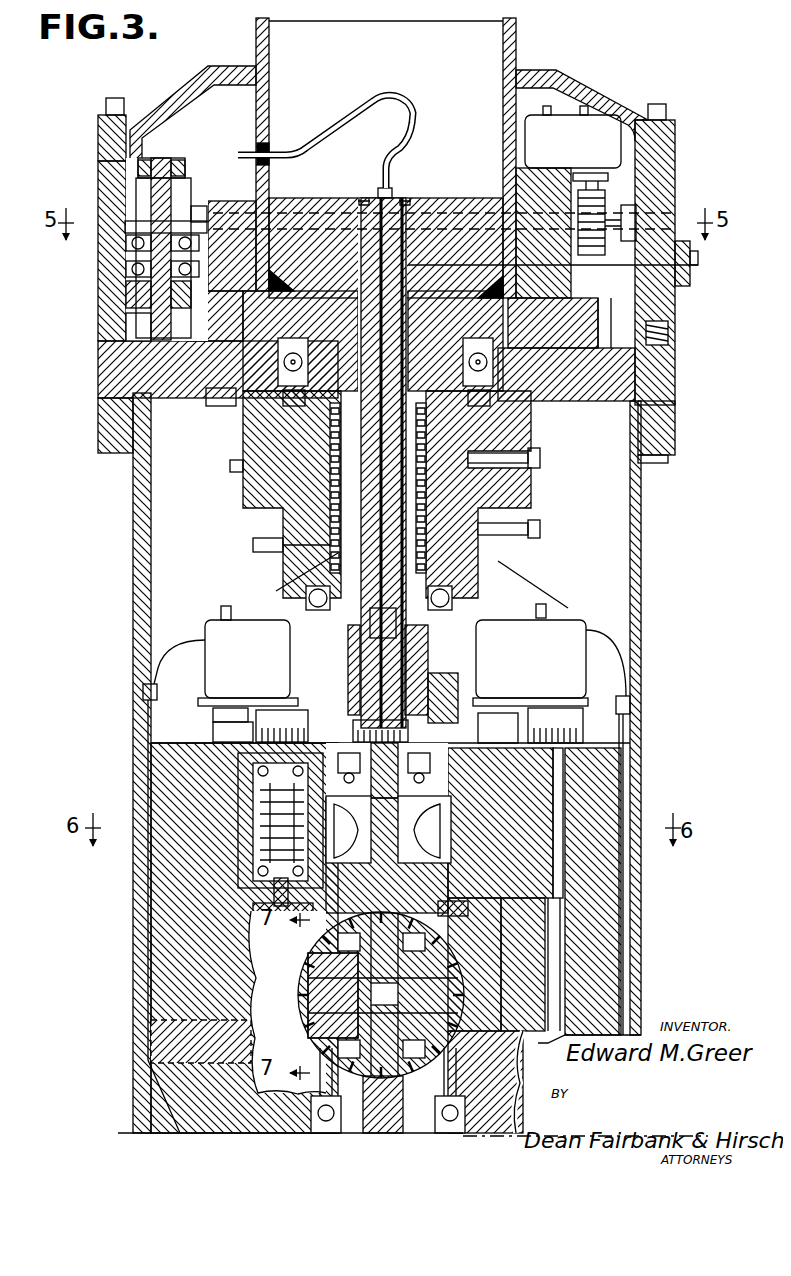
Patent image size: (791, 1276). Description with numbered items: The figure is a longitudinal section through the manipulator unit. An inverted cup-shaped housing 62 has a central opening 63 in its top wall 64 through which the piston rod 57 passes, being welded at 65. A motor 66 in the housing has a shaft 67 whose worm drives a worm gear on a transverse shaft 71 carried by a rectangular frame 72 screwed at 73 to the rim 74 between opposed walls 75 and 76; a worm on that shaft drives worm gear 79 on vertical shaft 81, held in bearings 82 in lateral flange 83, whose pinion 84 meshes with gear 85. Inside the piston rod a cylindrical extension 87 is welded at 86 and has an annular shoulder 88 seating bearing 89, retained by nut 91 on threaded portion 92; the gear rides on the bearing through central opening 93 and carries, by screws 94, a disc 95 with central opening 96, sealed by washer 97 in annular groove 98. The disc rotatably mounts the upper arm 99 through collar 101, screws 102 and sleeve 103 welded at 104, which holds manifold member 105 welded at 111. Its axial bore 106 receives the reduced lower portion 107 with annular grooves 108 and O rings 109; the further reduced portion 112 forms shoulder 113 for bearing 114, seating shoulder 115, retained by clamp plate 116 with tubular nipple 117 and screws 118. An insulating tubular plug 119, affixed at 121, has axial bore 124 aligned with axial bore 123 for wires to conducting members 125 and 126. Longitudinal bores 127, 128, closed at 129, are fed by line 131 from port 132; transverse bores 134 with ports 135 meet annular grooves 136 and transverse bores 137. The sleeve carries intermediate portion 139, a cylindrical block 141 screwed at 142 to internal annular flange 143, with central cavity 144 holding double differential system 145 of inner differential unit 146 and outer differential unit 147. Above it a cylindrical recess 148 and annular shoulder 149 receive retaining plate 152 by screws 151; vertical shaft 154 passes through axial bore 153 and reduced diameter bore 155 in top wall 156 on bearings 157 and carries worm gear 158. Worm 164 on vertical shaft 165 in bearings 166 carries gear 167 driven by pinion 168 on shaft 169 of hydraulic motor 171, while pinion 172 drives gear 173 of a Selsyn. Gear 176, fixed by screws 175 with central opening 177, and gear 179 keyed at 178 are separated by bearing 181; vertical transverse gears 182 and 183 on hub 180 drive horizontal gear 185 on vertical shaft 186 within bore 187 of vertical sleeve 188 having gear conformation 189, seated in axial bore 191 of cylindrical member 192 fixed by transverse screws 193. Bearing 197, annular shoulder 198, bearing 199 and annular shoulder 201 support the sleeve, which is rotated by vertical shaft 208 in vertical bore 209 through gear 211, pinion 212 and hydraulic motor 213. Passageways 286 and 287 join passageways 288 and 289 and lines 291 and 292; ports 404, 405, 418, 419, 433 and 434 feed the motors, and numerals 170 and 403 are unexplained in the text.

The piston rod 57 is at (512, 22).
The housing 62 is at (587, 72).
The central opening 63 is at (235, 82).
The top wall 64 is at (538, 64).
The weld 65 is at (246, 52).
The motor 66 is at (598, 136).
The shaft 67 is at (598, 172).
The shaft 71 is at (215, 195).
The rectangular frame 72 is at (668, 182).
The screws 73 is at (95, 97).
The rim 74 is at (90, 135).
The side wall 75 is at (660, 205).
The wall 76 is at (95, 246).
The worm gear 79 is at (188, 198).
The vertical shaft 81 is at (140, 188).
The bearings 82 is at (124, 262).
The lateral flange 83 is at (90, 322).
The pinion 84 is at (130, 287).
The gear 85 is at (168, 396).
The weld 86 is at (487, 267).
The cylindrical extension 87 is at (483, 310).
The annular shoulder 88 is at (468, 326).
The bearing 89 is at (490, 365).
The nut 91 is at (527, 398).
The threaded portion 92 is at (455, 386).
The central opening 93 is at (285, 308).
The screws 94 is at (202, 398).
The disc 95 is at (150, 353).
The central opening 96 is at (660, 335).
The washer 97 is at (662, 320).
The annular groove 98 is at (665, 300).
The upper arm 99 is at (122, 572).
The collar 101 is at (667, 426).
The screws 102 is at (662, 410).
The sleeve 103 is at (634, 521).
The weld 104 is at (645, 455).
The manifold member 105 is at (237, 486).
The axial bore 106 is at (527, 470).
The reduced lower portion 107 is at (535, 490).
The annular grooves 108 is at (422, 465).
The O ring 109 is at (420, 565).
The weld 111 is at (532, 386).
The further reduced portion 112 is at (535, 573).
The annular shoulder 113 is at (530, 560).
The bearing 114 is at (295, 592).
The annular shoulder 115 is at (300, 582).
The clamp plate 116 is at (485, 620).
The tubular nipple 117 is at (343, 658).
The screws 118 is at (282, 640).
The tubular plug 119 is at (478, 690).
The attachment 121 is at (340, 626).
The axial bore 123 is at (355, 190).
The axial bore 124 is at (470, 650).
The conducting member 125 is at (420, 652).
The conducting member 126 is at (425, 666).
The longitudinal bore 127 is at (356, 326).
The longitudinal bore 128 is at (400, 192).
The closed ends 129 is at (384, 180).
The line 131 is at (470, 200).
The port 132 is at (692, 250).
The transverse bore 134 is at (520, 437).
The port 135 is at (545, 456).
The annular groove 136 is at (322, 446).
The transverse bore 137 is at (268, 583).
The intermediate portion 139 is at (125, 916).
The cylindrical block 141 is at (645, 891).
The screws 142 is at (625, 721).
The internal annular flange 143 is at (630, 706).
The central cavity 144 is at (540, 979).
The double differential system 145 is at (292, 974).
The inner differential unit 146 is at (486, 956).
The outer differential unit 147 is at (295, 1040).
The cylindrical recess 148 is at (440, 831).
The annular shoulder 149 is at (480, 856).
The screws 151 is at (480, 871).
The retaining plate 152 is at (255, 889).
The axial bore 153 is at (445, 846).
The vertical shaft 154 is at (350, 776).
The reduced diameter bore 155 is at (360, 753).
The top wall 156 is at (580, 680).
The bearings 157 is at (455, 746).
The worm gear 158 is at (462, 771).
The worm 164 is at (250, 821).
The vertical shaft 165 is at (250, 796).
The bearings 166 is at (250, 763).
The gear 167 is at (265, 700).
The pinion 168 is at (215, 713).
The shaft 169 is at (225, 690).
The solenoid 170 is at (540, 614).
The hydraulic motor 171 is at (200, 632).
The pinion 172 is at (350, 726).
The gear 173 is at (438, 690).
The screws 175 is at (470, 896).
The gear 176 is at (265, 931).
The central opening 177 is at (470, 911).
The key 178 is at (445, 941).
The gear 179 is at (300, 996).
The hub 180 is at (490, 979).
The bearing 181 is at (330, 936).
The vertical transverse gear 182 is at (300, 1021).
The vertical transverse gear 183 is at (445, 1041).
The horizontal gear 185 is at (545, 1036).
The vertical shaft 186 is at (352, 1126).
The bore 187 is at (322, 1126).
The vertical sleeve 188 is at (393, 1126).
The gear conformation 189 is at (262, 1126).
The axial bore 191 is at (440, 1126).
The cylindrical member 192 is at (175, 1068).
The transverse screws 193 is at (125, 1026).
The bearing 197 is at (465, 1076).
The annular shoulder 198 is at (290, 1126).
The bearing 199 is at (470, 1126).
The annular shoulder 201 is at (460, 1089).
The vertical shaft 208 is at (556, 790).
The vertical bore 209 is at (560, 856).
The gear 211 is at (630, 690).
The pinion 212 is at (620, 660).
The hydraulic motor 213 is at (630, 650).
The passageway 286 is at (135, 881).
The passageway 287 is at (645, 913).
The passageway 288 is at (145, 713).
The passageway 289 is at (630, 736).
The line 291 is at (200, 612).
The line 292 is at (622, 615).
The plug 403 is at (222, 458).
The port 404 is at (210, 598).
The port 405 is at (255, 614).
The port 418 is at (531, 583).
The port 419 is at (620, 600).
The port 433 is at (528, 100).
The port 434 is at (590, 100).